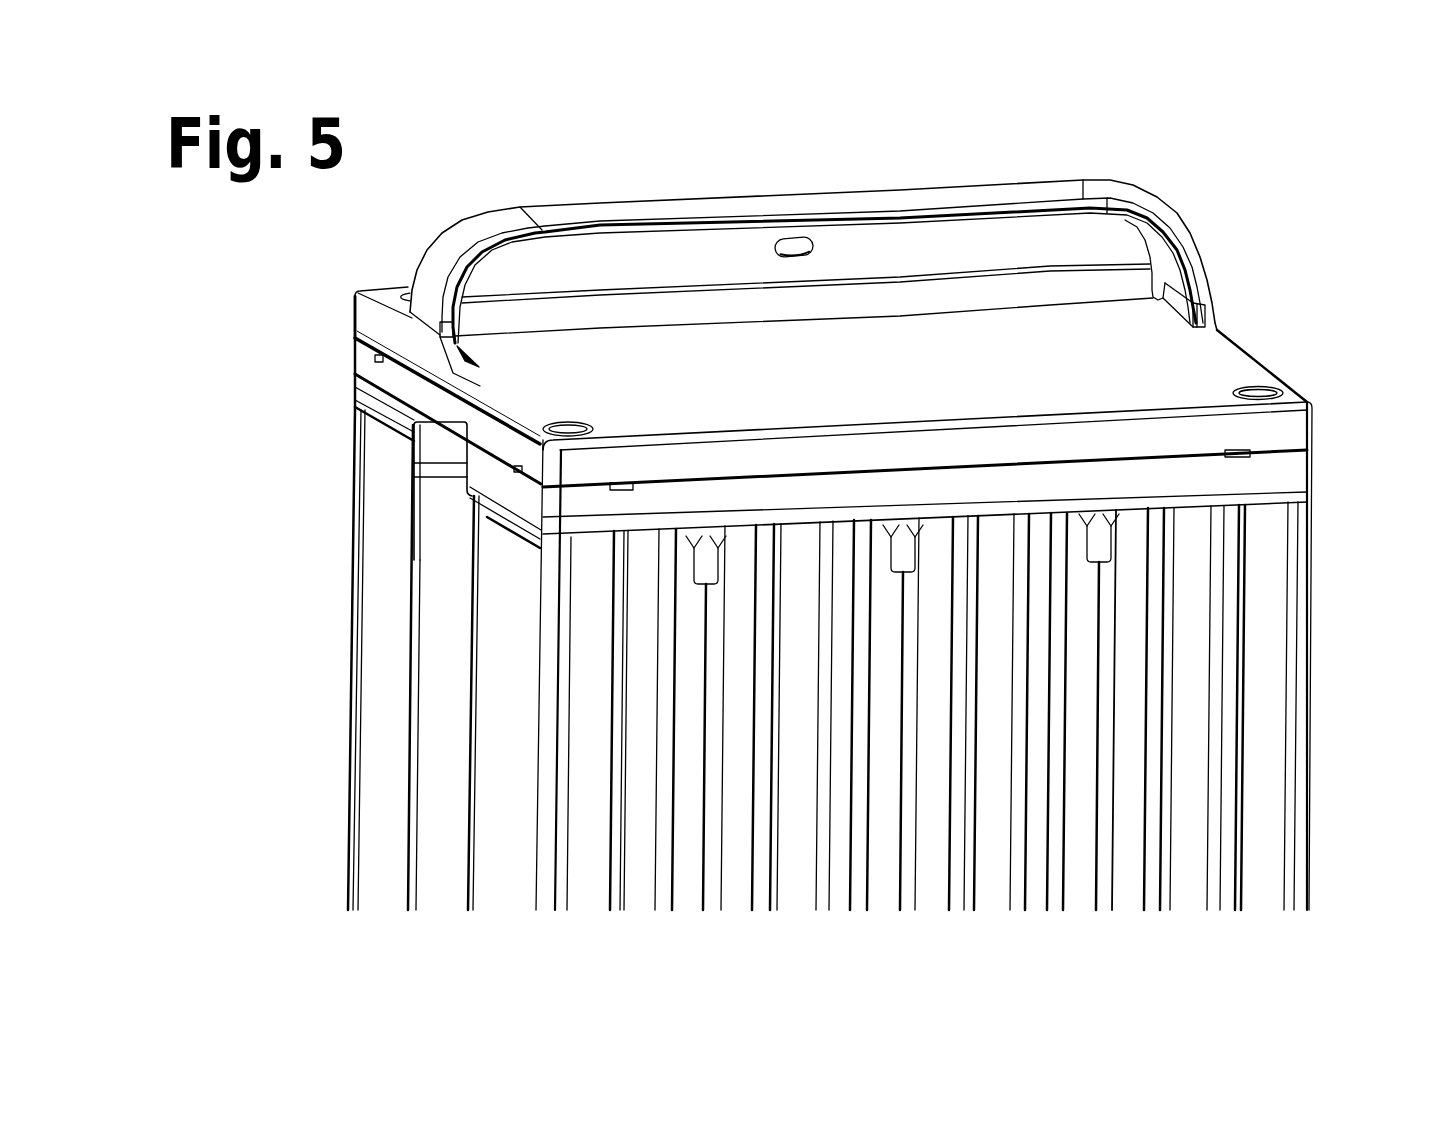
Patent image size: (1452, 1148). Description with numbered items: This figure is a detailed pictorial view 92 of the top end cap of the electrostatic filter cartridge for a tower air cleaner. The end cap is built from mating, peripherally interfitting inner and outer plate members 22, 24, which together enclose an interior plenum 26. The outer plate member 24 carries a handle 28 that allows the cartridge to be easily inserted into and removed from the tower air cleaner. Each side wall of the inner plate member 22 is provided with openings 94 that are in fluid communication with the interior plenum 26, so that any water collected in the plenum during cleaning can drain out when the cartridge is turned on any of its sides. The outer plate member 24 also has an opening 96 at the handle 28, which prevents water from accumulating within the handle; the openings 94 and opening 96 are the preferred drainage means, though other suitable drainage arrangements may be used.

The inner plate member 22 is at (355, 406).
The outer plate member 24 is at (362, 320).
The interior plenum 26 is at (1226, 315).
The handle 28 is at (957, 190).
The rear pictorial view of the top end cap 92 is at (303, 648).
The openings 94 is at (383, 373).
The opening 96 is at (825, 243).